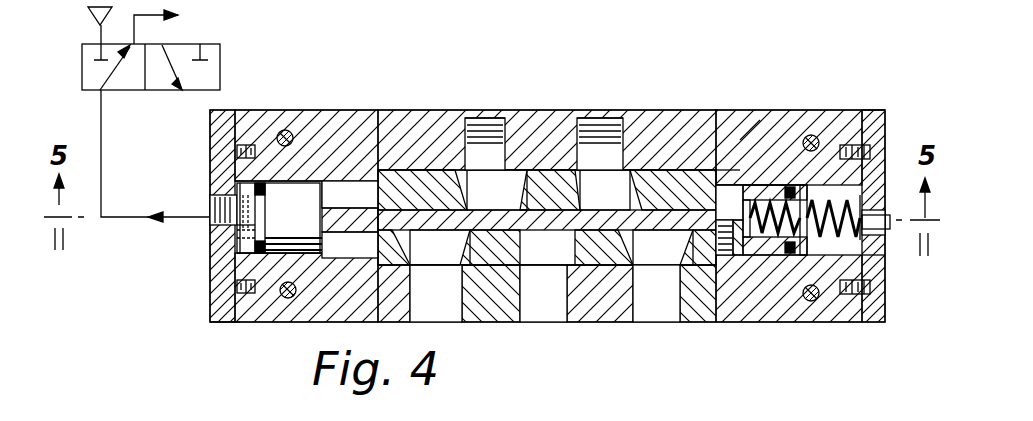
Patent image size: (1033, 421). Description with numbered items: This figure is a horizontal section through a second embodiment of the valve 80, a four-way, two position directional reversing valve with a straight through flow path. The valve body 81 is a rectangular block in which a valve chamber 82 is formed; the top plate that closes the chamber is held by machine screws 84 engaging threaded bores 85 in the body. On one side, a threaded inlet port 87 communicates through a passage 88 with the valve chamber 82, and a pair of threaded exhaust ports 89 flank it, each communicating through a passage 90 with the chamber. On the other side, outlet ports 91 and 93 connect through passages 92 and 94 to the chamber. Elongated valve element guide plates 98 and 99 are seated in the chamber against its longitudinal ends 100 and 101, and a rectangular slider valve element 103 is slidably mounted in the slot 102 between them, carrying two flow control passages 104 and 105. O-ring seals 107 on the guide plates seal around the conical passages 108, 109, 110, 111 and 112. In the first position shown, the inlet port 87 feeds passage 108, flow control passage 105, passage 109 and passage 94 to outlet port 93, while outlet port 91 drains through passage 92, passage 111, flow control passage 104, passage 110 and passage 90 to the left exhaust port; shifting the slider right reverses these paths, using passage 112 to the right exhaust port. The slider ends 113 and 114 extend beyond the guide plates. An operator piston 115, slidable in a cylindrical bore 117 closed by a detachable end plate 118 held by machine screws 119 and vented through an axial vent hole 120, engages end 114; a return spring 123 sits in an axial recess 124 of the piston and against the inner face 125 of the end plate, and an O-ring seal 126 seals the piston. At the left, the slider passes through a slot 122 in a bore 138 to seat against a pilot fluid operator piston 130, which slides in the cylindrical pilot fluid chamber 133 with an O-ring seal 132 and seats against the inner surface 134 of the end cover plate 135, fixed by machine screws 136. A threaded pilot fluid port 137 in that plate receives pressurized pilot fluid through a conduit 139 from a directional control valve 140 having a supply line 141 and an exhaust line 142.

The valve 80 is at (415, 100).
The valve body 81 is at (380, 110).
The valve chamber 82 is at (700, 110).
The machine screws 84 is at (285, 130).
The threaded bores 85 is at (292, 130).
The threaded inlet port 87 is at (556, 285).
The passage 88 is at (565, 278).
The threaded exhaust ports 89 is at (446, 300).
The passage 90 is at (458, 282).
The outlet port 91 is at (482, 118).
The passage 92 is at (508, 118).
The outlet port 93 is at (592, 118).
The passage 94 is at (625, 118).
The valve element guide plate 98 is at (724, 254).
The valve element guide plate 99 is at (735, 112).
The longitudinal end of valve chamber 100 is at (420, 130).
The longitudinal end of valve chamber 101 is at (756, 118).
The longitudinally extended slot 102 is at (425, 178).
The slider valve element 103 is at (358, 244).
The flow control passage 104 is at (497, 190).
The flow control passage 105 is at (580, 236).
The O-ring seals 107 is at (522, 122).
The passage 108 is at (510, 268).
The passage 109 is at (577, 184).
The passage 110 is at (396, 262).
The passage 111 is at (525, 178).
The passage 112 is at (698, 266).
The end of slider valve element 113 is at (321, 245).
The end of slider valve element 114 is at (705, 183).
The operator piston 115 is at (764, 136).
The cylindrical bore 117 is at (842, 112).
The detachable end plate 118 is at (880, 112).
The machine screws 119 is at (870, 150).
The axial vent hole 120 is at (888, 232).
The slot 122 is at (318, 222).
The return spring 123 is at (850, 300).
The axial recess 124 is at (760, 240).
The inner face of cover plate 125 is at (870, 185).
The O-ring seal 126 is at (790, 257).
The pilot fluid operator piston 130 is at (321, 190).
The O-ring seal 132 is at (237, 251).
The cylindrical pilot fluid chamber 133 is at (318, 178).
The inner surface of end cover plate 134 is at (243, 150).
The end cover plate 135 is at (212, 322).
The machine screws 136 is at (240, 150).
The threaded pilot fluid port 137 is at (237, 236).
The bore 138 is at (348, 165).
The conduit 139 is at (172, 216).
The directional control valve 140 is at (232, 50).
The supply line 141 is at (99, 30).
The exhaust line 142 is at (134, 30).